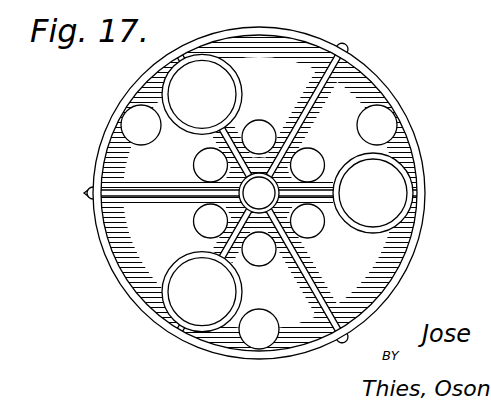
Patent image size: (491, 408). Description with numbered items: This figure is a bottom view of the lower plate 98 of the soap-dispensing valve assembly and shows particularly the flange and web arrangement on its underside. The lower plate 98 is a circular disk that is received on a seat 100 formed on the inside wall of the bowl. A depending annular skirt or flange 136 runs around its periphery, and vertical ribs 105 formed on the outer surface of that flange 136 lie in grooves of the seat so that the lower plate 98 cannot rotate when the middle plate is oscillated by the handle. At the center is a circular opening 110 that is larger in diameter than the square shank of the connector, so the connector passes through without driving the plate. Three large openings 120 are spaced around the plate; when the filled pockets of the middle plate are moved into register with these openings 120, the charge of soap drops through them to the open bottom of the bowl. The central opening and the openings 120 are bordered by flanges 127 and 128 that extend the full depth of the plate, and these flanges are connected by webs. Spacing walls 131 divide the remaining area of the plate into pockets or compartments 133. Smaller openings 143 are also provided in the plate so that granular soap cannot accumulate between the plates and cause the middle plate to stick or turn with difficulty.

The lower plate 98 is at (418, 143).
The seat 100 is at (288, 263).
The ribs 105 is at (90, 199).
The central opening 110 is at (263, 177).
The openings 120 is at (295, 193).
The flanges 127 is at (200, 198).
The flanges 128 is at (238, 81).
The spacing walls 131 is at (300, 130).
The compartments 133 is at (337, 48).
The annular flange 136 is at (149, 81).
The openings 143 is at (129, 111).